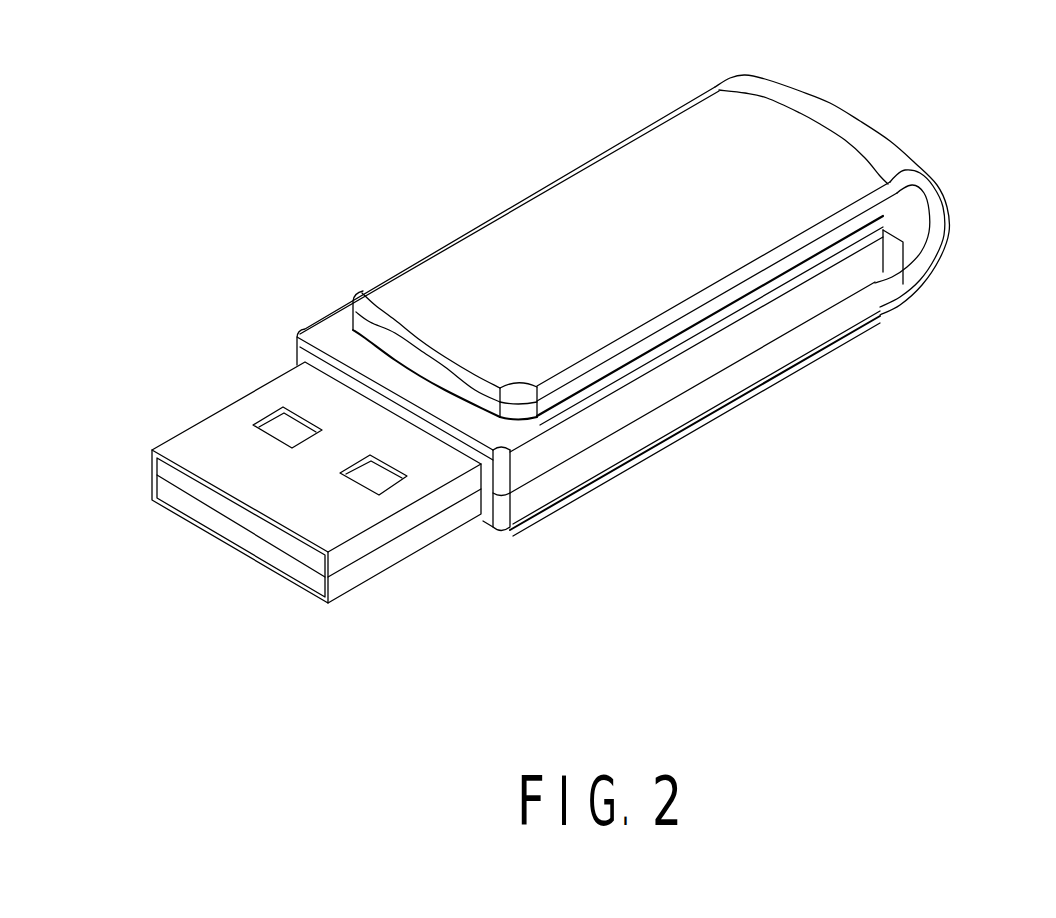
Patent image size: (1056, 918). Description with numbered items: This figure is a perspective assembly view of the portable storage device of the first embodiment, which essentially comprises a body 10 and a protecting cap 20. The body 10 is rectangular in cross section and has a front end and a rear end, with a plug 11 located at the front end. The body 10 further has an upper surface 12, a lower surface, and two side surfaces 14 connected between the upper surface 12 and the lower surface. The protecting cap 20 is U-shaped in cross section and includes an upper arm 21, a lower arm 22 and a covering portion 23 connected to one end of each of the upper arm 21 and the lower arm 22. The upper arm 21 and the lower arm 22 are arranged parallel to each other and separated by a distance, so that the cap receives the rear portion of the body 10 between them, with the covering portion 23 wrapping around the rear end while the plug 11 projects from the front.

The body 10 is at (600, 312).
The plug 11 is at (230, 435).
The upper surface 12 is at (330, 330).
The side surfaces 14 is at (610, 433).
The protecting cap 20 is at (701, 278).
The upper arm 21 is at (473, 273).
The lower arm 22 is at (833, 350).
The covering portion 23 is at (927, 206).